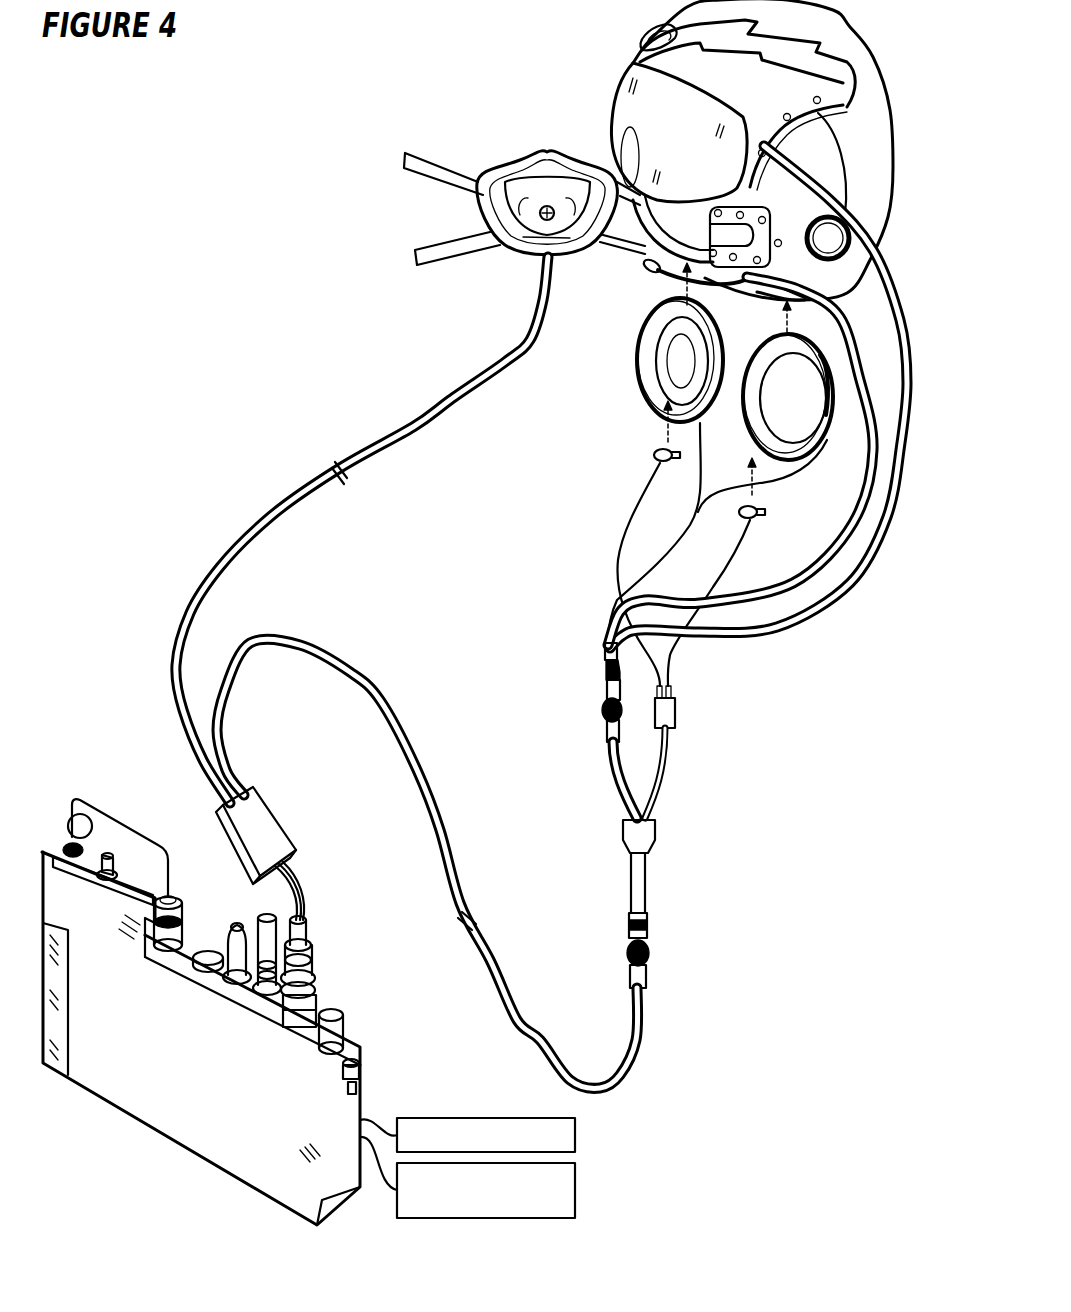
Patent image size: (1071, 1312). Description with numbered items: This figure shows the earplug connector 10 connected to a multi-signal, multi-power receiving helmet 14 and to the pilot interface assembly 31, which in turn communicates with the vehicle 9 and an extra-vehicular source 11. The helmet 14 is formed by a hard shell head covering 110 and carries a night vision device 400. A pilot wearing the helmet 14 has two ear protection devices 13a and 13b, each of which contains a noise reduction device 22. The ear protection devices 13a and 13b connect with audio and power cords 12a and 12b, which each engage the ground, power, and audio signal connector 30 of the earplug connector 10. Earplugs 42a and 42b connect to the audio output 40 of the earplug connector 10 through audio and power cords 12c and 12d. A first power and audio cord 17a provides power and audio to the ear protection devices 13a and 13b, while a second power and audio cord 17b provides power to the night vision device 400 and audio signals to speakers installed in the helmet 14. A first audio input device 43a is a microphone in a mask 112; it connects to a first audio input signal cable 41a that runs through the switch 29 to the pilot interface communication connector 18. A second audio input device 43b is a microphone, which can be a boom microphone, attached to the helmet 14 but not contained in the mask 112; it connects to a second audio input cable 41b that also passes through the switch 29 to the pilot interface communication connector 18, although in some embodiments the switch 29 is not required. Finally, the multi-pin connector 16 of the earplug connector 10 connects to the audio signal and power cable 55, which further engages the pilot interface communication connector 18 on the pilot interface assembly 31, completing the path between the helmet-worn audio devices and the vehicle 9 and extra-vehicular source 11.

The multi-signal, multi-power receiving helmet 14 is at (737, 166).
The hard shell head covering 110 is at (866, 81).
The night vision device 400 is at (628, 110).
The first audio input device 43a is at (547, 210).
The second audio input device 43b is at (648, 270).
The mask 112 is at (524, 214).
The ear protection device 13a is at (662, 371).
The ear protection device 13b is at (810, 417).
The noise reduction device 22 is at (683, 375).
The audio and power cord 12a is at (697, 435).
The audio and power cord 12b is at (798, 472).
The audio and power cord 12c is at (643, 510).
The audio and power cord 12d is at (722, 565).
The earplug 42a is at (655, 455).
The earplug 42b is at (757, 516).
The first audio input signal cable 41a is at (410, 424).
The second audio input cable 41b is at (851, 536).
The first power and audio cord 17a is at (609, 603).
The second power and audio cord 17b is at (842, 580).
The ground, power, and audio signal connector 30 is at (600, 695).
The audio output 40 is at (677, 715).
The earplug connector 10 is at (615, 904).
The multi-pin connector 16 is at (647, 930).
The audio signal and power cable 55 is at (603, 1090).
The switch 29 is at (262, 823).
The pilot interface communication connector 18 is at (316, 1005).
The pilot interface assembly 31 is at (201, 1012).
The vehicle 9 is at (576, 1137).
The extra-vehicular source 11 is at (576, 1190).